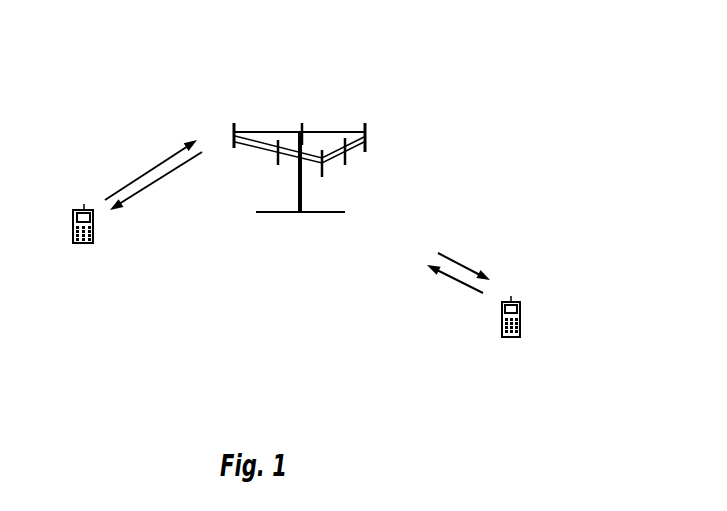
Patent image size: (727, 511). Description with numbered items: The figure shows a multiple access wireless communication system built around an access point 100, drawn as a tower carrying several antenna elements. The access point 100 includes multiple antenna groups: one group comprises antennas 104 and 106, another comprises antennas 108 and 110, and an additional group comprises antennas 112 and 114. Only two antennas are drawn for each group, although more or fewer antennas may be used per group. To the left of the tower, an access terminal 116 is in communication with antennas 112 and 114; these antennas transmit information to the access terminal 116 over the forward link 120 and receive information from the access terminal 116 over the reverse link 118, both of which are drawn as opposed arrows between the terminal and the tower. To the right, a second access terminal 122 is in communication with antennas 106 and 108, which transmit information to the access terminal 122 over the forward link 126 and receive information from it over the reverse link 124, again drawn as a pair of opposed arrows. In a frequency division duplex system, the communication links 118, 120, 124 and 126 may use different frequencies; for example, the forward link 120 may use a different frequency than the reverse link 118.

The access point 100 is at (285, 215).
The antenna 104 is at (322, 177).
The antenna 106 is at (345, 165).
The antenna 108 is at (367, 143).
The antenna 110 is at (304, 123).
The antenna 112 is at (238, 133).
The antenna 114 is at (278, 165).
The access terminal 116 is at (84, 206).
The reverse link 118 is at (152, 170).
The forward link 120 is at (162, 180).
The access terminal 122 is at (510, 298).
The reverse link 124 is at (450, 277).
The forward link 126 is at (465, 265).